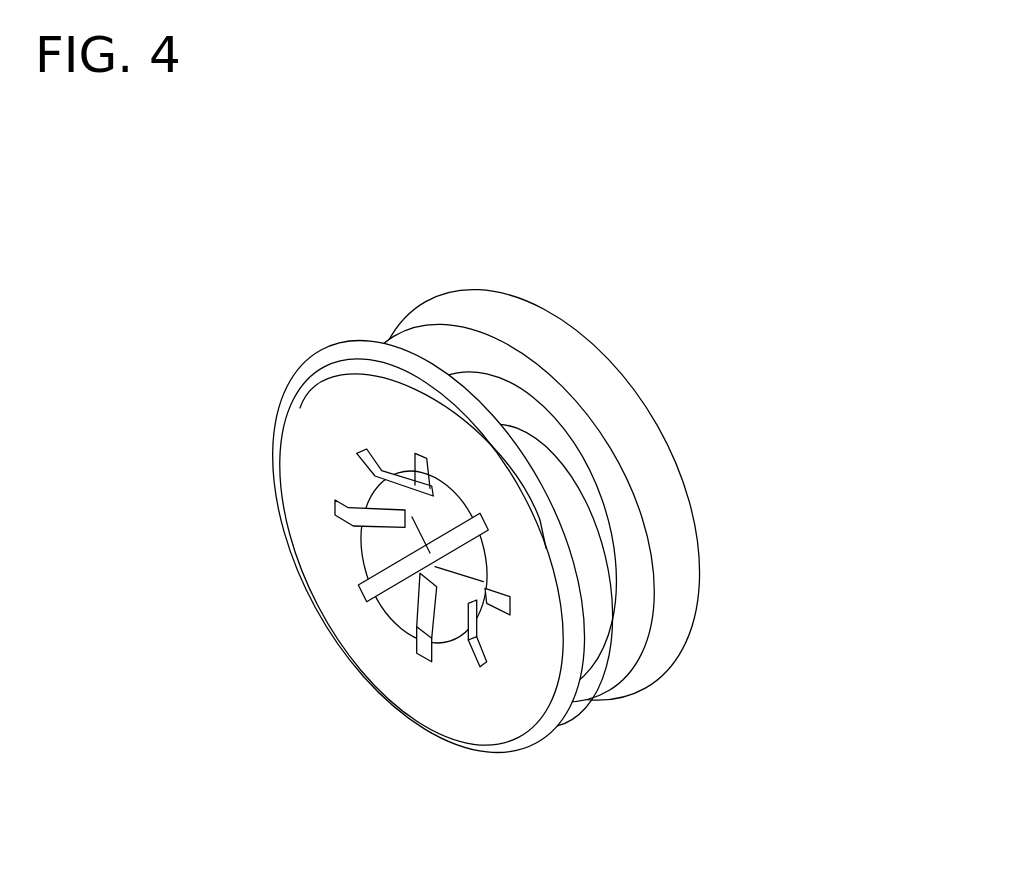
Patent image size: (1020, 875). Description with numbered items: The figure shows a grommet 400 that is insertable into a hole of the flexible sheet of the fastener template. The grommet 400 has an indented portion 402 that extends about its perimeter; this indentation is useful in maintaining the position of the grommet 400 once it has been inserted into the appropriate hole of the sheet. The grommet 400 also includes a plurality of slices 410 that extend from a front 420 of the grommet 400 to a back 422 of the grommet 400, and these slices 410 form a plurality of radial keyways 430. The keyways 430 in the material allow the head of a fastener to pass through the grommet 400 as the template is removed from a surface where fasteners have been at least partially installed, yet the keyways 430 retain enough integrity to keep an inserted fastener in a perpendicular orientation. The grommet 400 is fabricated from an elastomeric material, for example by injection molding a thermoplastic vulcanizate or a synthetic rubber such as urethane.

The grommet 400 is at (693, 500).
The indented portion 402 is at (611, 562).
The slices 410 is at (418, 523).
The front 420 is at (347, 400).
The back 422 is at (643, 398).
The radial keyways 430 is at (390, 617).